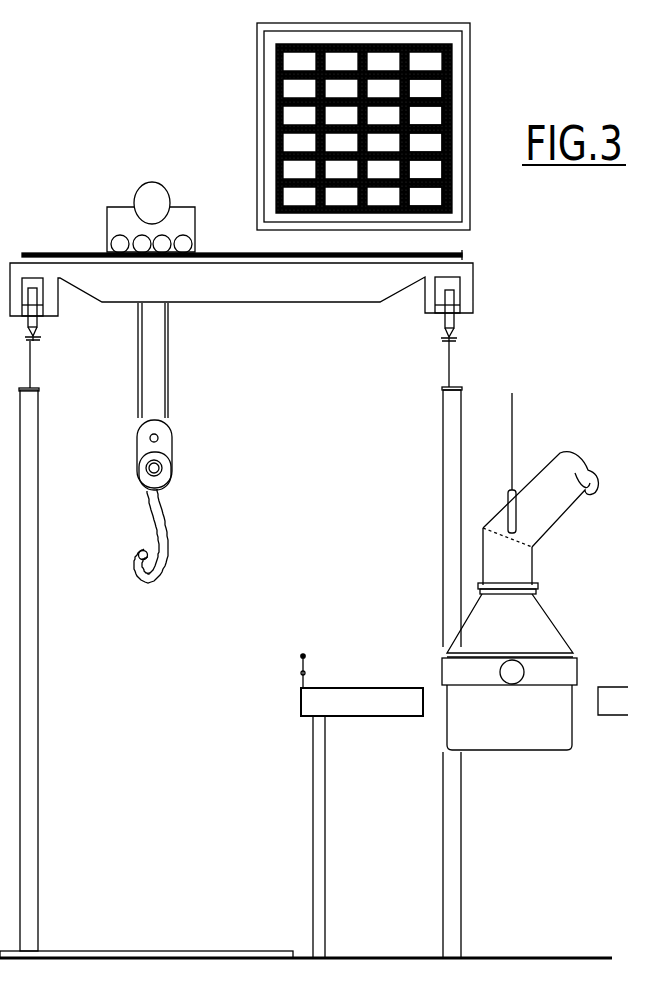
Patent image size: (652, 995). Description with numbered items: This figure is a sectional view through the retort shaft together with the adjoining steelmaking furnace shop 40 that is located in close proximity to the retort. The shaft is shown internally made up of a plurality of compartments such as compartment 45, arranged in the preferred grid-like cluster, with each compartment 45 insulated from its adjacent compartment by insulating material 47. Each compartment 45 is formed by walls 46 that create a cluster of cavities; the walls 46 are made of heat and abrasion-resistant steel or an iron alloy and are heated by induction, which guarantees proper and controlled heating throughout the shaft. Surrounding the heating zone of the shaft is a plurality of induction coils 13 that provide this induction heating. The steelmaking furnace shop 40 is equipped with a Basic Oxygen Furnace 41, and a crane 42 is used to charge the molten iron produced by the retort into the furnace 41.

The induction coils 13 is at (467, 80).
The compartment 45 is at (447, 86).
The insulating material 47 is at (448, 109).
The walls 46 is at (448, 143).
The steelmaking furnace shop 40 is at (335, 405).
The crane 42 is at (278, 292).
The Basic Oxygen Furnace 41 is at (533, 618).